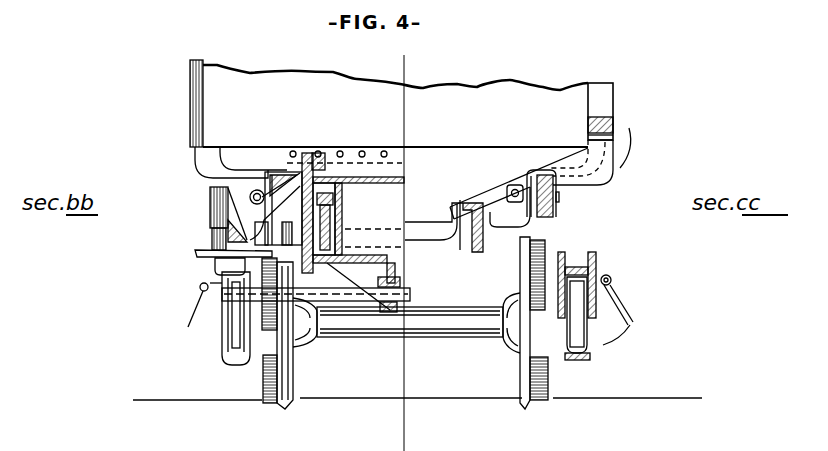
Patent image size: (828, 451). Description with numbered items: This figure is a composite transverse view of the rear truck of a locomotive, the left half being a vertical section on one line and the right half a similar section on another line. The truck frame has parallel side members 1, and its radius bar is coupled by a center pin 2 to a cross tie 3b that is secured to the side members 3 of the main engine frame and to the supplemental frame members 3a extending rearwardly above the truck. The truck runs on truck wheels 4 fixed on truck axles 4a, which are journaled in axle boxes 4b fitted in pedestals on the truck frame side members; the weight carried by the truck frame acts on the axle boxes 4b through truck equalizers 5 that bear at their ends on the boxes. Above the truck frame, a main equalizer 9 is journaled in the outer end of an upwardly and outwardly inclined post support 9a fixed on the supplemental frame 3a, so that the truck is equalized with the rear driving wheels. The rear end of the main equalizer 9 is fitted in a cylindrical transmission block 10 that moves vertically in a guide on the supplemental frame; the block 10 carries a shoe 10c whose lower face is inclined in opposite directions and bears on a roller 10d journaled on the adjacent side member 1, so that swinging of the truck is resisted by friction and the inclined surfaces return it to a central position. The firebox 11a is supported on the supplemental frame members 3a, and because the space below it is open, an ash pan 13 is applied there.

The side member of truck frame 1 is at (578, 266).
The center pin 2 is at (395, 318).
The side member of main frame 3 is at (302, 150).
The supplemental frame member 3a is at (472, 244).
The cross tie 3b is at (343, 208).
The truck wheel 4 is at (266, 388).
The truck axle 4a is at (430, 328).
The axle box 4b is at (210, 353).
The truck equalizer 5 is at (612, 273).
The main equalizer 9 is at (212, 206).
The post support 9a is at (493, 187).
The transmission block 10 is at (212, 240).
The shoe 10c is at (196, 256).
The roller 10d is at (200, 290).
The firebox 11a is at (613, 98).
The ash pan 13 is at (460, 200).